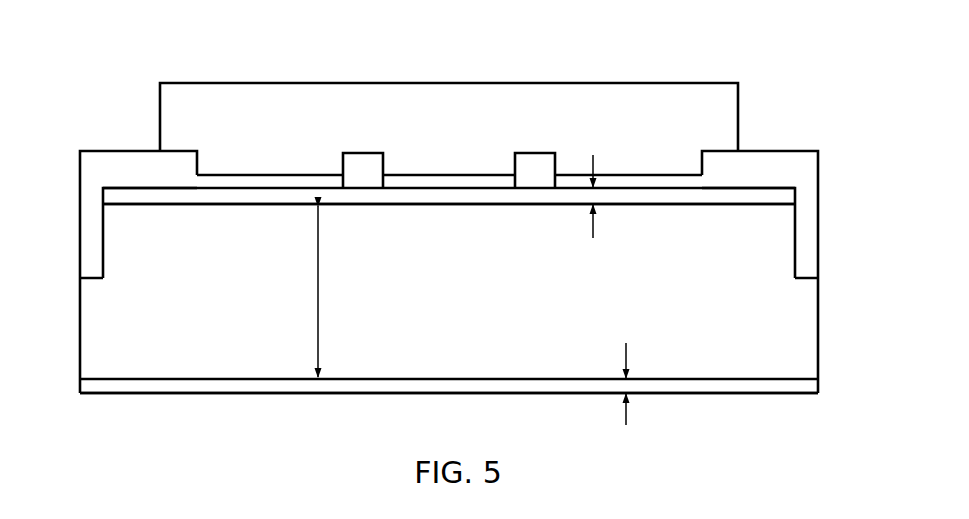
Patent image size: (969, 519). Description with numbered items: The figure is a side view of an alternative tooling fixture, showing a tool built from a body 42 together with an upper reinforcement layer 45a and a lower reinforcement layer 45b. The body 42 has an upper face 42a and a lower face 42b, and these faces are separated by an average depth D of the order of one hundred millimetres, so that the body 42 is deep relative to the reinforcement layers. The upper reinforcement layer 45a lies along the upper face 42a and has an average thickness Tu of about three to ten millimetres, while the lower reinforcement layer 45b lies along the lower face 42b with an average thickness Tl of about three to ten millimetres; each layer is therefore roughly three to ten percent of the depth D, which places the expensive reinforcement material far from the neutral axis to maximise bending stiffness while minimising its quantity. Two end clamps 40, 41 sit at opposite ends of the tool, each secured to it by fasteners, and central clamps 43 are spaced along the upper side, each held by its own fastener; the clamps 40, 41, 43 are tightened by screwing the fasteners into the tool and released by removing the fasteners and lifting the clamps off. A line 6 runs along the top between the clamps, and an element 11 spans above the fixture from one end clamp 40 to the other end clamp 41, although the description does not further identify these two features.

The wiring line 6 is at (266, 180).
The connection wire 11 is at (288, 88).
The end clamp 40 is at (120, 149).
The end clamp 41 is at (773, 163).
The body of the tool 42 is at (245, 347).
The upper face of the body 42a is at (780, 200).
The lower face of the body 42b is at (147, 380).
The central clamp 43 is at (515, 163).
The upper reinforcement layer 45a is at (673, 197).
The lower reinforcement layer 45b is at (770, 387).
The average depth D is at (329, 291).
The average thickness of the upper reinforcement layer Tu is at (593, 214).
The average thickness of the lower reinforcement layer Tl is at (627, 404).